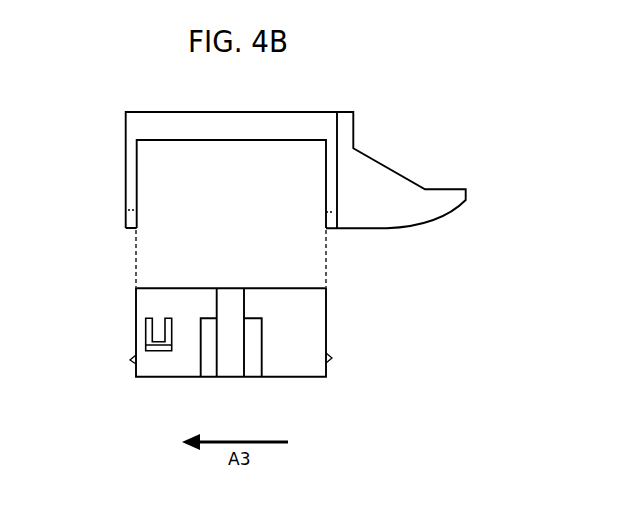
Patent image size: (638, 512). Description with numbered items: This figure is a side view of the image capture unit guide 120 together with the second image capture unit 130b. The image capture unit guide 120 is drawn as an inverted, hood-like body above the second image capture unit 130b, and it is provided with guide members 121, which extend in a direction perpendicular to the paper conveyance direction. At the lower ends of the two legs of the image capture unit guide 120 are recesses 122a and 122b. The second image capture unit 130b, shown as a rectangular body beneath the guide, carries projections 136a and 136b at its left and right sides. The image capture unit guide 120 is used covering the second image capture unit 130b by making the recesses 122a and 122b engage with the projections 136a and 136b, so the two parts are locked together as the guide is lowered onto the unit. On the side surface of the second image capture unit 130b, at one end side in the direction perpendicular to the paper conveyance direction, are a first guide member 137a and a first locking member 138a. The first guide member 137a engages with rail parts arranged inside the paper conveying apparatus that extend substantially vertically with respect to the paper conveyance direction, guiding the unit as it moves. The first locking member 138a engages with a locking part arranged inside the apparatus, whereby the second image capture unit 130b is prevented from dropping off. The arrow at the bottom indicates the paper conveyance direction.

The image capture unit guide 120 is at (240, 119).
The guide members 121 is at (388, 173).
The recess 122a is at (137, 210).
The recess 122b is at (327, 213).
The second image capture unit 130b is at (320, 305).
The projection 136a is at (135, 358).
The projection 136b is at (330, 360).
The first guide member 137a is at (212, 345).
The first locking member 138a is at (160, 350).